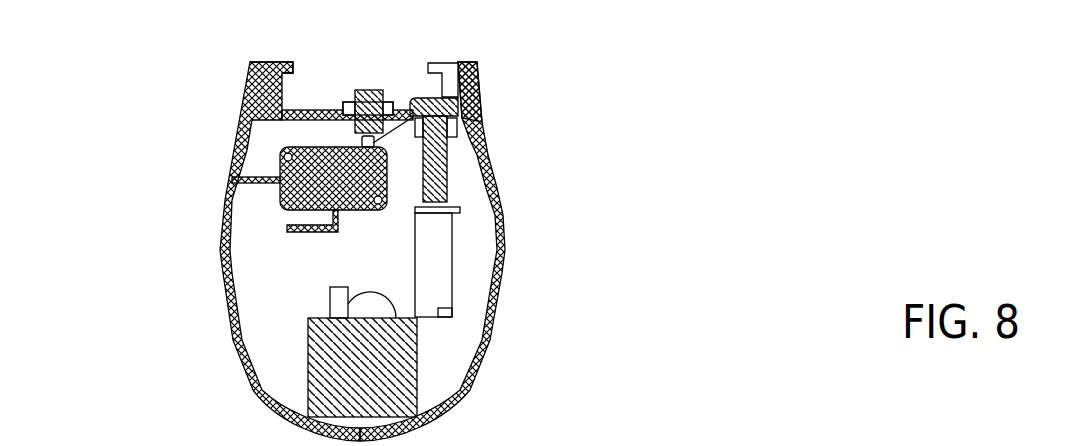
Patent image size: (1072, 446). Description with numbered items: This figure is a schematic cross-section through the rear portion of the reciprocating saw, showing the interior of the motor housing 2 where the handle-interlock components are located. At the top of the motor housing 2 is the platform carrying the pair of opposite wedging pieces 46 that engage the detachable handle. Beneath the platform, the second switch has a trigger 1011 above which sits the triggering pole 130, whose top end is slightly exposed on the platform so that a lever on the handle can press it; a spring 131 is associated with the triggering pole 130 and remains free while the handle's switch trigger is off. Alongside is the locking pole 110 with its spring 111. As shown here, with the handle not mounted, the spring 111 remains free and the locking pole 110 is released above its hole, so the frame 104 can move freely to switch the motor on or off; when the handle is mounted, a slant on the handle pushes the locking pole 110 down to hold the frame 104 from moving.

The motor housing 2 is at (222, 198).
The wedging pieces 46 is at (430, 63).
The trigger 1011 is at (475, 83).
The spring 131 is at (345, 107).
The triggering pole 130 is at (355, 123).
The spring 111 is at (478, 117).
The locking pole 110 is at (447, 158).
The frame 104 is at (458, 208).